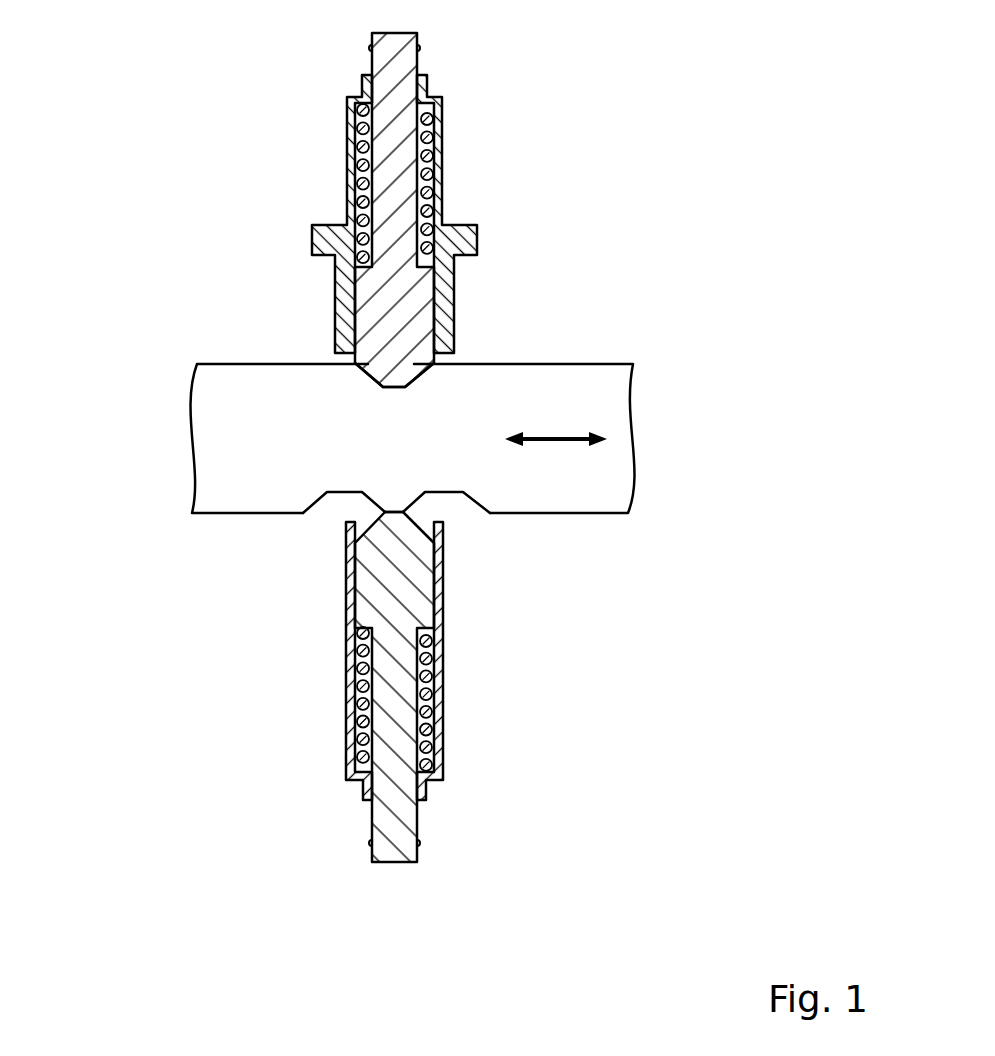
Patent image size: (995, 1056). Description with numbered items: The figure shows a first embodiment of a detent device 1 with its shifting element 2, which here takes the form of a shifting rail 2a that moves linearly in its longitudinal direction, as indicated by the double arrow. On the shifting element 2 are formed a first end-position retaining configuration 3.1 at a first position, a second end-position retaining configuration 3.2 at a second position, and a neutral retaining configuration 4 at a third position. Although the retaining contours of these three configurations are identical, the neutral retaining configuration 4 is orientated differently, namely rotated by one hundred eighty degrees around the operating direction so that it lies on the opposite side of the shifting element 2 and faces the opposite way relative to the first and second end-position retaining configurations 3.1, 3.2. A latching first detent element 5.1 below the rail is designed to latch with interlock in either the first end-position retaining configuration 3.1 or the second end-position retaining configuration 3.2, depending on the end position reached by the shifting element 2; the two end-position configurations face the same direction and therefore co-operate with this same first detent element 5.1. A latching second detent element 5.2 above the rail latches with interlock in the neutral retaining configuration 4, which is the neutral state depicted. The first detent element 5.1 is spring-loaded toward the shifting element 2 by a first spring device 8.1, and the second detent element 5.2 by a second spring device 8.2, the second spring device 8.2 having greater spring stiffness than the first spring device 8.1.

The detent device 1 is at (425, 431).
The shifting element 2 is at (504, 450).
The shifting rail 2a is at (592, 477).
The first end-position retaining configuration 3.1 is at (338, 503).
The second end-position retaining configuration 3.2 is at (450, 503).
The neutral retaining configuration 4 is at (398, 387).
The first detent element 5.1 is at (388, 593).
The second detent element 5.2 is at (398, 222).
The first spring device 8.1 is at (440, 713).
The second spring device 8.2 is at (355, 129).